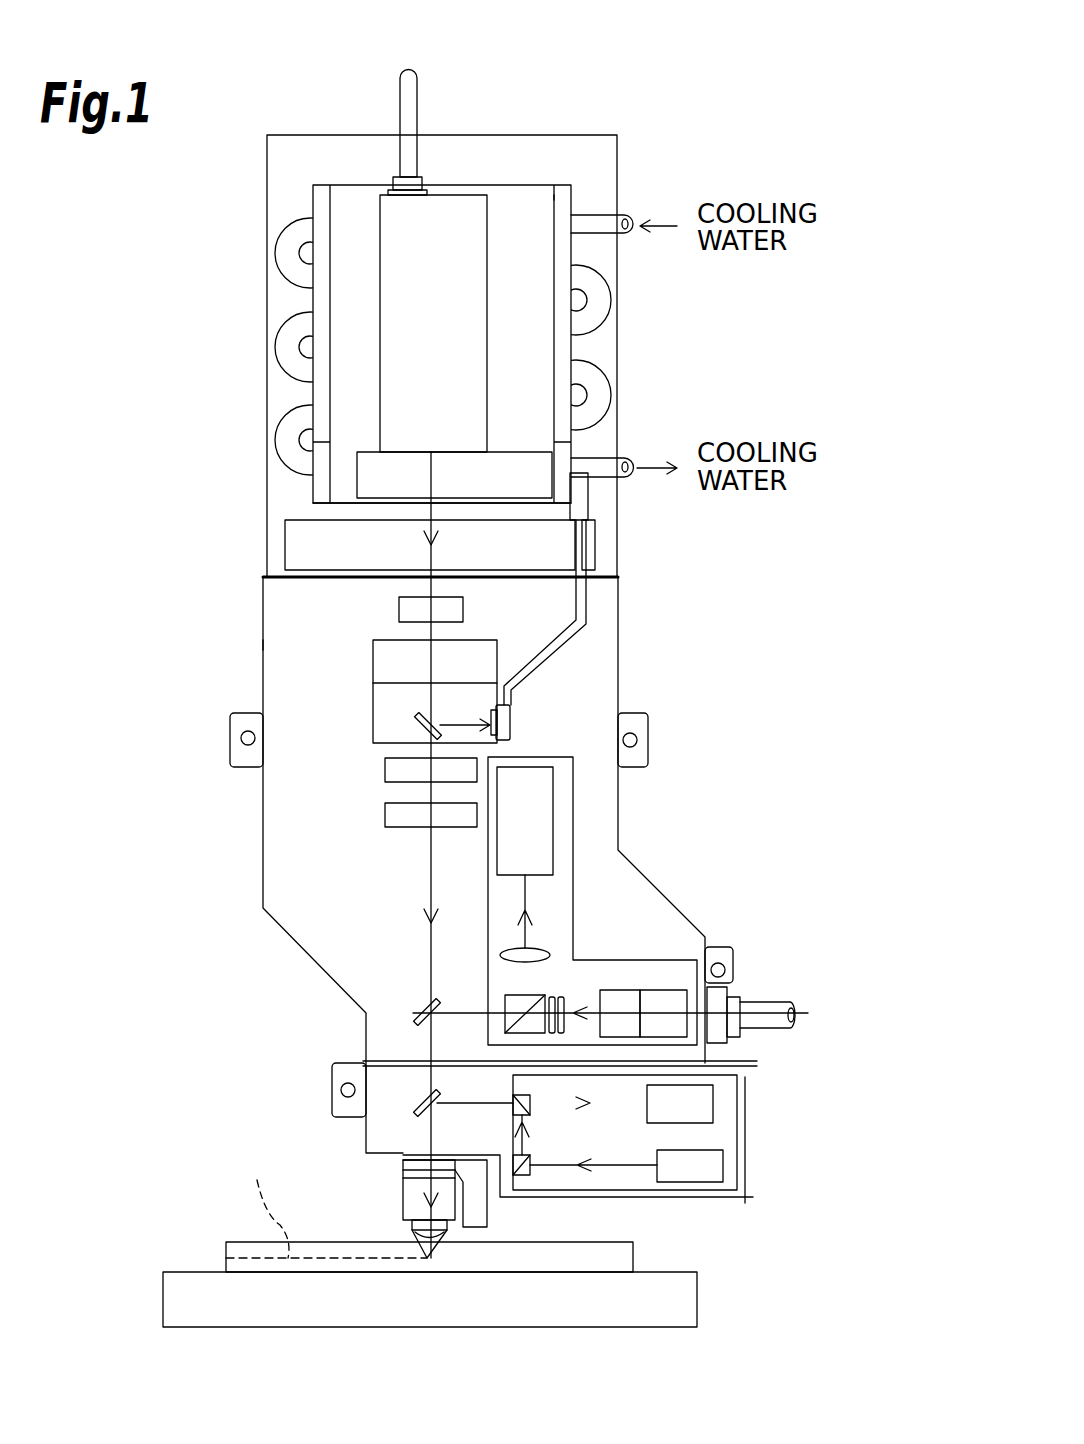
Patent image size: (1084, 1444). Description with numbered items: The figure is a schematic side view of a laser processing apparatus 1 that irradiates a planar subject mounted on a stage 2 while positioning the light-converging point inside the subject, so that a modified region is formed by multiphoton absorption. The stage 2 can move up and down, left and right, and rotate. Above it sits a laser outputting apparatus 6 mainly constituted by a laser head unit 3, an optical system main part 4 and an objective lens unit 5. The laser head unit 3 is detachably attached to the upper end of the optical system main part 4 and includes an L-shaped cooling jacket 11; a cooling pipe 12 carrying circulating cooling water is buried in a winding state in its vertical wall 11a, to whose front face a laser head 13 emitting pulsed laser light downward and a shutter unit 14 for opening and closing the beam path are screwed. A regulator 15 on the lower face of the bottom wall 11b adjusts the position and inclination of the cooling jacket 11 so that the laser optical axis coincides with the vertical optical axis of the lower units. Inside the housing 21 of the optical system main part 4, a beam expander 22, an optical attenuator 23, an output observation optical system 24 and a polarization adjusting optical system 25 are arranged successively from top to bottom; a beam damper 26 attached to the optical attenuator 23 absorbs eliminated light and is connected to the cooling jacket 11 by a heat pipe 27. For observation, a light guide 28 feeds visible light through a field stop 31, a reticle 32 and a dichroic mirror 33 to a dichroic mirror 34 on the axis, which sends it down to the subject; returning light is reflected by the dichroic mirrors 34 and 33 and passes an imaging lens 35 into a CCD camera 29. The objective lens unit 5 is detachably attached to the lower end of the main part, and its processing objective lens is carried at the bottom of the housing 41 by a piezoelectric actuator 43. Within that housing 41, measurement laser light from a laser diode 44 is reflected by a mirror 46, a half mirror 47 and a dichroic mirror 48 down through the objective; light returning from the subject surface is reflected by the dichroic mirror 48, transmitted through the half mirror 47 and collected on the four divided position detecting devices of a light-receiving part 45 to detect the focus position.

The laser processing apparatus 1 is at (673, 77).
The stage 2 is at (163, 1302).
The laser head unit 3 is at (617, 400).
The optical system main part 4 is at (618, 677).
The objective lens unit 5 is at (745, 1137).
The laser outputting apparatus 6 is at (262, 645).
The cooling jacket 11 is at (313, 205).
The vertical wall 11a is at (520, 195).
The bottom wall 11b is at (318, 505).
The cooling pipe 12 is at (283, 435).
The laser head 13 is at (440, 212).
The shutter unit 14 is at (527, 477).
The regulator 15 is at (295, 549).
The housing 21 is at (262, 872).
The beam expander 22 is at (399, 608).
The optical attenuator 23 is at (372, 714).
The output observation optical system 24 is at (385, 771).
The polarization adjusting optical system 25 is at (385, 814).
The beam damper 26 is at (510, 718).
The heat pipe 27 is at (586, 600).
The light guide 28 is at (760, 1005).
The CCD camera 29 is at (553, 815).
The field stop 31 is at (663, 990).
The reticle 32 is at (622, 990).
The dichroic mirror 33 is at (540, 995).
The dichroic mirror 34 is at (423, 1012).
The imaging lens 35 is at (515, 950).
The housing 41 is at (365, 1135).
The actuator 43 is at (488, 1212).
The laser diode 44 is at (723, 1165).
The light-receiving part 45 is at (713, 1103).
The mirror 46 is at (530, 1170).
The half mirror 47 is at (530, 1110).
The dichroic mirror 48 is at (425, 1098).